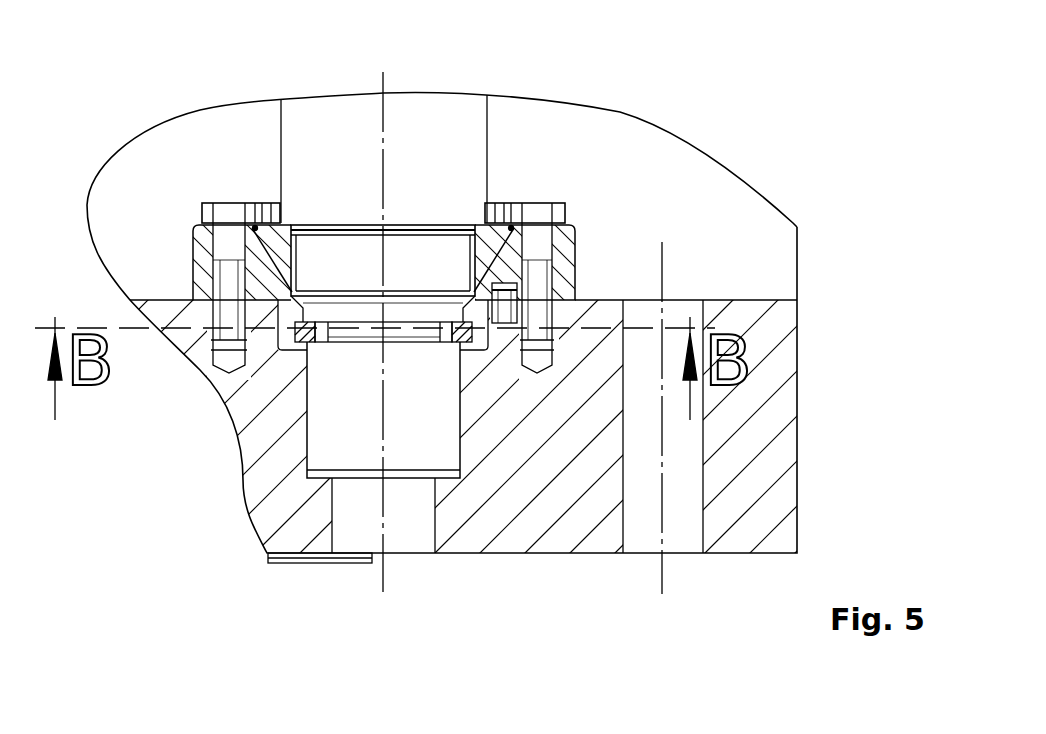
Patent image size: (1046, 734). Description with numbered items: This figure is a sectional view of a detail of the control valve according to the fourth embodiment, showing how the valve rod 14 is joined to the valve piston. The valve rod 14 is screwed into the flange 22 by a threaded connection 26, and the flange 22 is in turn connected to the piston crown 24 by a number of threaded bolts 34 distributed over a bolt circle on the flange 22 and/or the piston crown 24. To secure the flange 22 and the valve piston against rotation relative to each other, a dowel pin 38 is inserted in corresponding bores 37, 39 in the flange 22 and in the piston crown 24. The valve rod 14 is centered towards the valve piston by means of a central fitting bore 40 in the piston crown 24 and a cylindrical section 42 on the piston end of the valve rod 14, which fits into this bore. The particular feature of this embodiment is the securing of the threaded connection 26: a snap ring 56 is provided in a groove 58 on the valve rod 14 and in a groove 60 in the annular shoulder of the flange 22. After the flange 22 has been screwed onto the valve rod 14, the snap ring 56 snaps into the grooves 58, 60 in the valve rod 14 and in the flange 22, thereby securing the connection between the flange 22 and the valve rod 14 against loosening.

The valve rod 14 is at (458, 113).
The flange 22 is at (190, 268).
The piston crown 24 is at (253, 389).
The threaded connection 26 is at (275, 222).
The threaded bolts 34 is at (205, 200).
The bore 37 is at (575, 292).
The dowel pin 38 is at (508, 306).
The bore 39 is at (508, 280).
The central fitting bore 40 is at (305, 435).
The cylindrical section 42 is at (327, 458).
The snap ring 56 is at (470, 345).
The groove 58 is at (462, 342).
The groove 60 is at (483, 352).